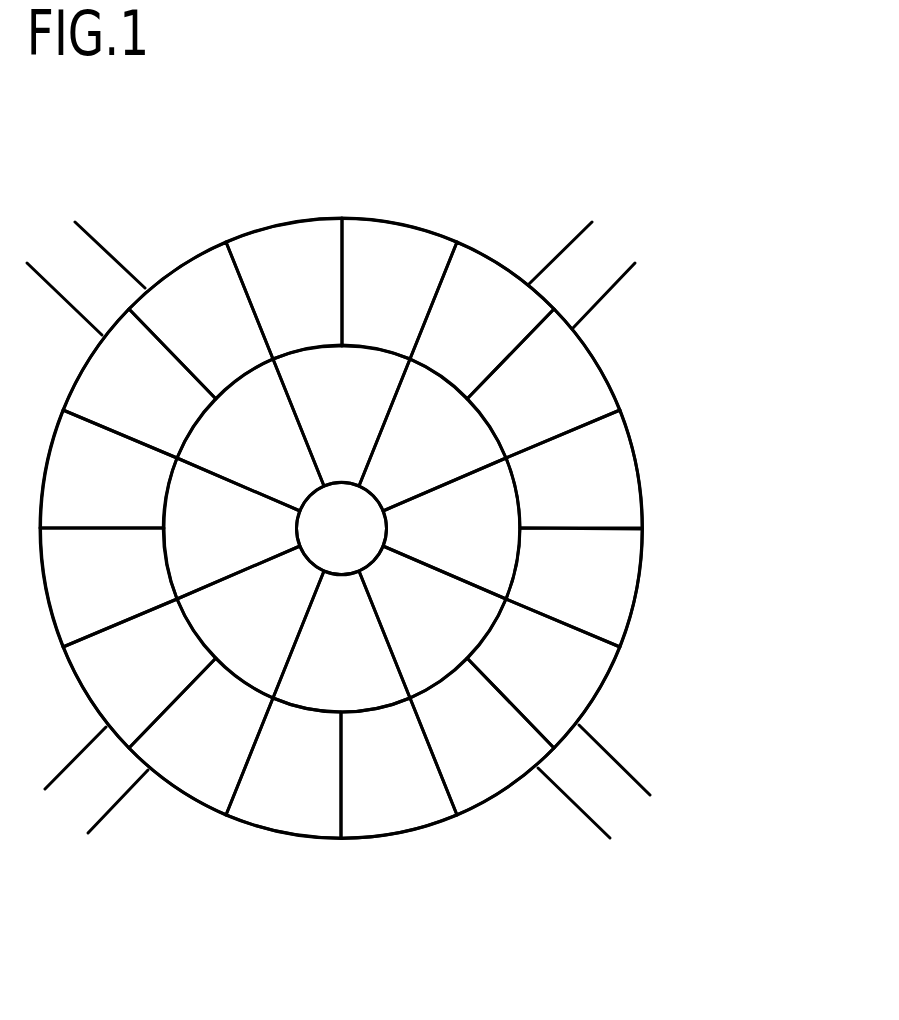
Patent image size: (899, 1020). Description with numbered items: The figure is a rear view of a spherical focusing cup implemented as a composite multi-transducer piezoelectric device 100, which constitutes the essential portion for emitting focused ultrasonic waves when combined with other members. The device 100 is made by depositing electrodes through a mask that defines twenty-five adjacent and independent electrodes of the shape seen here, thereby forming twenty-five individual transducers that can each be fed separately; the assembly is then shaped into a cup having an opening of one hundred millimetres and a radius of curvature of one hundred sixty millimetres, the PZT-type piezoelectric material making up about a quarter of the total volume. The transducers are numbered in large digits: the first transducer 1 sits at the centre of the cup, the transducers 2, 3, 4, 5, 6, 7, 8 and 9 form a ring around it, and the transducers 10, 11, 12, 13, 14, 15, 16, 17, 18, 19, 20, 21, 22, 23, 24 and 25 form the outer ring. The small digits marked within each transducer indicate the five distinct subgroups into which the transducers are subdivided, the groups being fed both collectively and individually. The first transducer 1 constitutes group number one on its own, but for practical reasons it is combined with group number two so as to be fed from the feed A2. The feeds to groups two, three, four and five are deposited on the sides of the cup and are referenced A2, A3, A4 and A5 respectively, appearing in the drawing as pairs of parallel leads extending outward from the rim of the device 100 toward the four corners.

The first transducer 1 is at (342, 529).
The individual transducer 2 is at (451, 528).
The individual transducer 3 is at (432, 622).
The individual transducer 4 is at (341, 641).
The individual transducer 5 is at (250, 622).
The individual transducer 6 is at (231, 528).
The individual transducer 7 is at (250, 435).
The individual transducer 8 is at (341, 415).
The individual transducer 9 is at (432, 435).
The individual transducer 10 is at (574, 469).
The individual transducer 11 is at (574, 587).
The individual transducer 12 is at (543, 673).
The individual transducer 13 is at (482, 736).
The individual transducer 14 is at (399, 768).
The individual transducer 15 is at (283, 768).
The individual transducer 16 is at (201, 736).
The individual transducer 17 is at (139, 673).
The individual transducer 18 is at (108, 587).
The individual transducer 19 is at (108, 469).
The individual transducer 20 is at (139, 383).
The individual transducer 21 is at (201, 320).
The individual transducer 22 is at (284, 288).
The individual transducer 23 is at (399, 288).
The individual transducer 24 is at (482, 320).
The individual transducer 25 is at (543, 383).
The feed A2 is at (86, 278).
The feed A3 is at (594, 781).
The feed A4 is at (96, 780).
The feed A5 is at (581, 275).
The composite multi-transducer device 100 is at (658, 528).